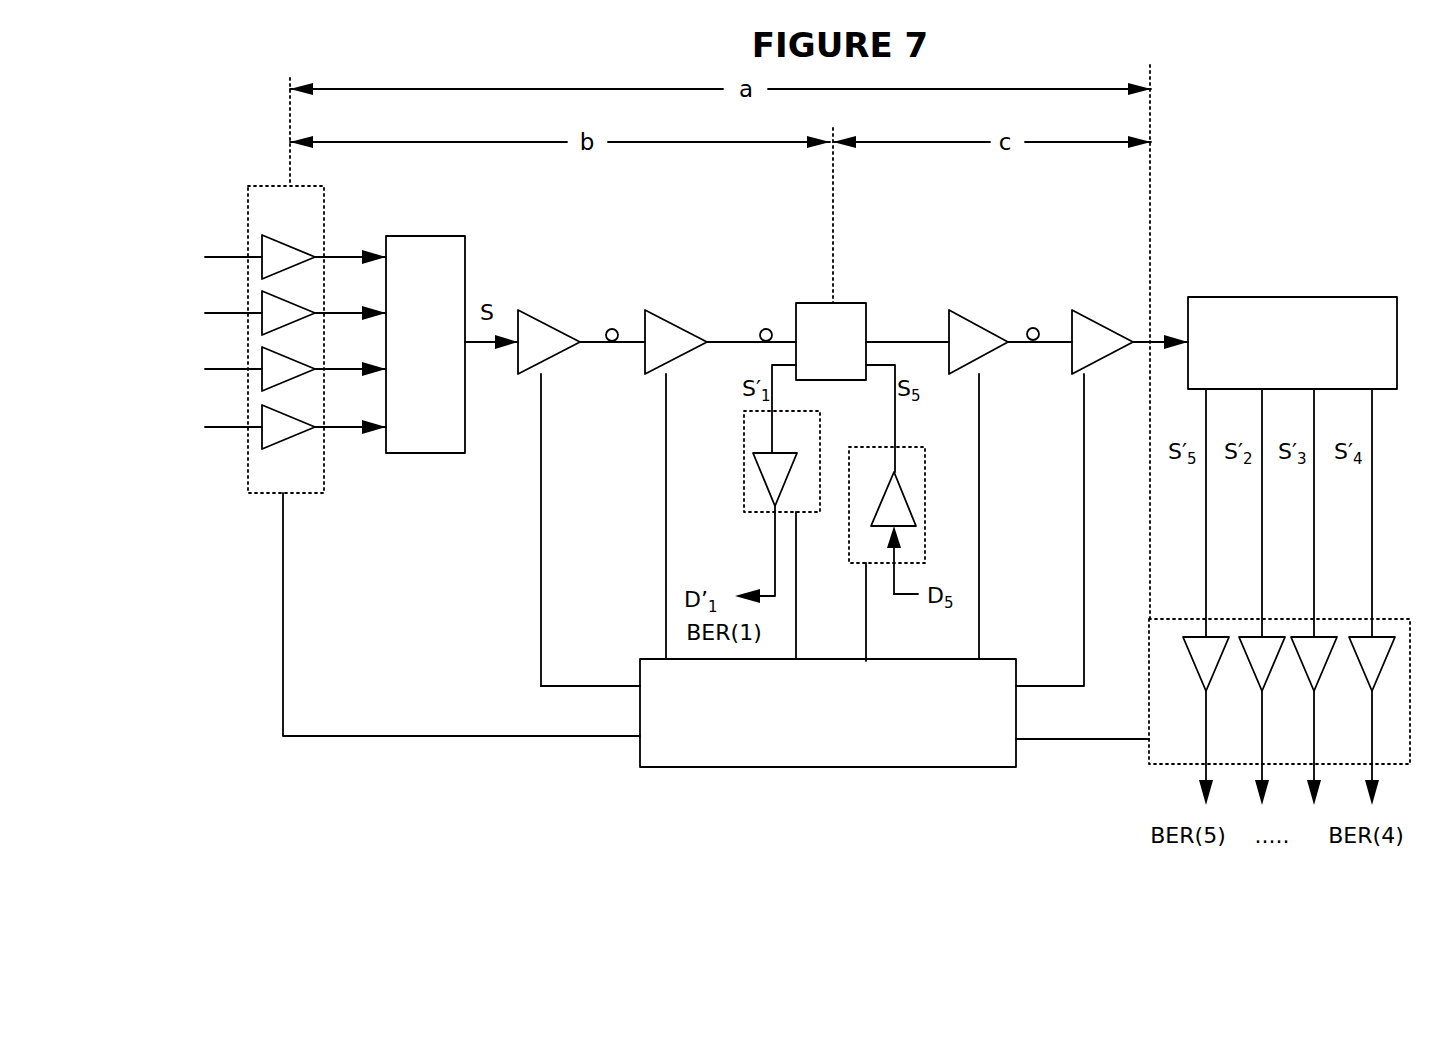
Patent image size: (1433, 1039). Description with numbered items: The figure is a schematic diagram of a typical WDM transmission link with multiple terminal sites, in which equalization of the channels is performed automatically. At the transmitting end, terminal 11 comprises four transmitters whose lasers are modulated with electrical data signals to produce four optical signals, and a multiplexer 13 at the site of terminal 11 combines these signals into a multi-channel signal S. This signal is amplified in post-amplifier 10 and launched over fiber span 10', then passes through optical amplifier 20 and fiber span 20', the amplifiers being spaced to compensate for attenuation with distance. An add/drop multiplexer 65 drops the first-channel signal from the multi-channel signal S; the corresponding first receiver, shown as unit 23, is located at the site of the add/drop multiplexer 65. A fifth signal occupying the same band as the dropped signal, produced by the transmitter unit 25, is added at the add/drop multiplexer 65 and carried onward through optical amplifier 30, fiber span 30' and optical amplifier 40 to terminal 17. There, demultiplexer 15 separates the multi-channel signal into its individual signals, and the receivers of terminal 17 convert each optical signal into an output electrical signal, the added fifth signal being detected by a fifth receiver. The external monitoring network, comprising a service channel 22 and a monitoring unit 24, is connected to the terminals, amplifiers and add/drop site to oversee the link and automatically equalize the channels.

The post-amplifier 10 is at (585, 304).
The fiber span 10' is at (628, 389).
The terminal 11 is at (268, 493).
The multiplexer 13 is at (430, 236).
The demultiplexer 15 is at (1275, 297).
The terminal 17 is at (1149, 762).
The optical amplifier 20 is at (685, 313).
The fiber span 20' is at (782, 295).
The service channel 22 is at (325, 736).
The monitoring receiver R1 23 is at (743, 498).
The monitoring unit 24 is at (706, 767).
The monitoring transmitter T5 25 is at (925, 510).
The optical amplifier 30 is at (993, 314).
The fiber span 30' is at (1017, 381).
The optical amplifier 40 is at (1080, 315).
The add/drop multiplexer 65 is at (838, 303).